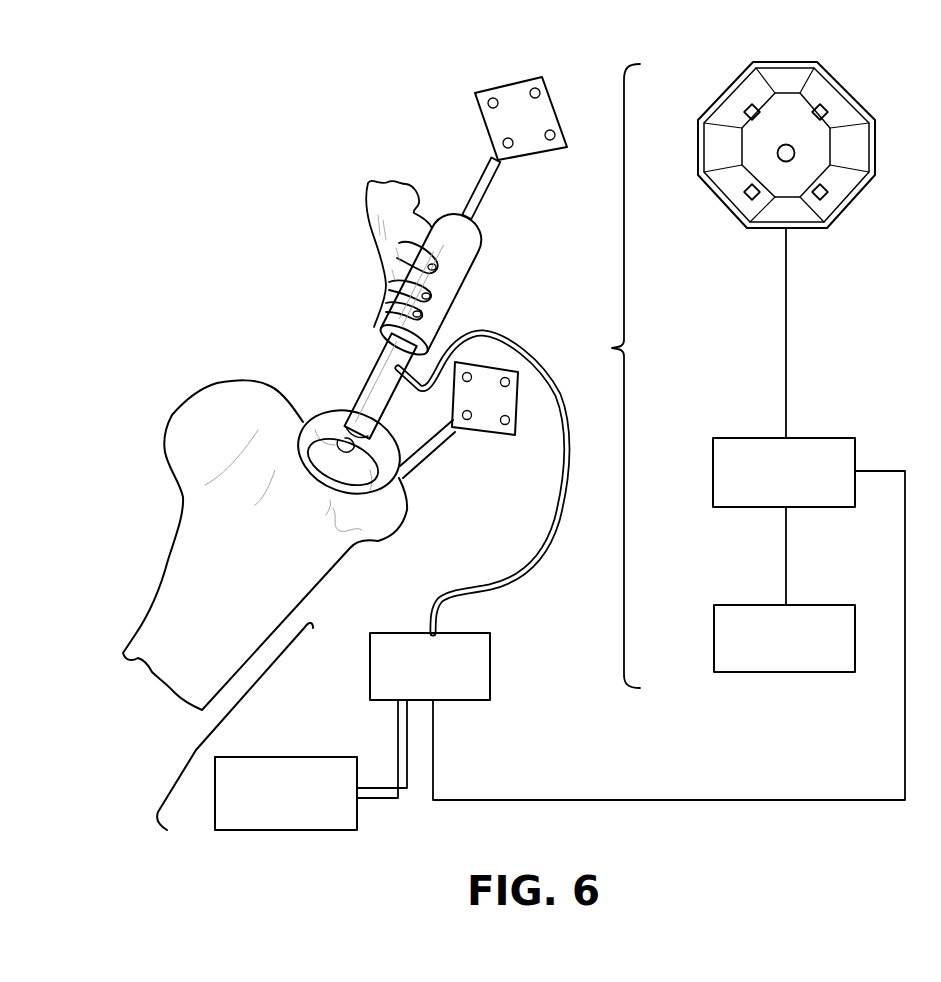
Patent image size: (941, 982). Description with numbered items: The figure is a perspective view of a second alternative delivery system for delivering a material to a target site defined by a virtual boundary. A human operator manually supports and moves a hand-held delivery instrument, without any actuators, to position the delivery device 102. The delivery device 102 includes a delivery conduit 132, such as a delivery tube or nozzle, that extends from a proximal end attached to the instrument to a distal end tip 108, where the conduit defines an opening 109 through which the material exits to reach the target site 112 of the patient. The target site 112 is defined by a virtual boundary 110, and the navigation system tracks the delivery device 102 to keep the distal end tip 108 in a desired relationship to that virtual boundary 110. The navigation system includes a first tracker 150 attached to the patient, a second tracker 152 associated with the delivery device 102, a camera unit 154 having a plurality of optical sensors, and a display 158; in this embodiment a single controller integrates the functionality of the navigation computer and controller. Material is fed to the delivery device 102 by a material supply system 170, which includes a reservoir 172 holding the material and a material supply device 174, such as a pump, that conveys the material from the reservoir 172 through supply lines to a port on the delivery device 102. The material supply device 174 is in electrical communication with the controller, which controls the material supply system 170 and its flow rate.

The delivery device 102 is at (346, 331).
The distal end tip 108 is at (330, 437).
The opening 109 is at (383, 437).
The virtual boundary 110 is at (305, 471).
The target site 112 is at (345, 520).
The delivery conduit 132 is at (353, 432).
The first tracker 150 is at (485, 436).
The second tracker 152 is at (506, 78).
The camera unit 154 is at (811, 162).
The display 158 is at (714, 641).
The material supply system 170 is at (197, 752).
The reservoir 172 is at (215, 797).
The material supply device 174 is at (370, 667).